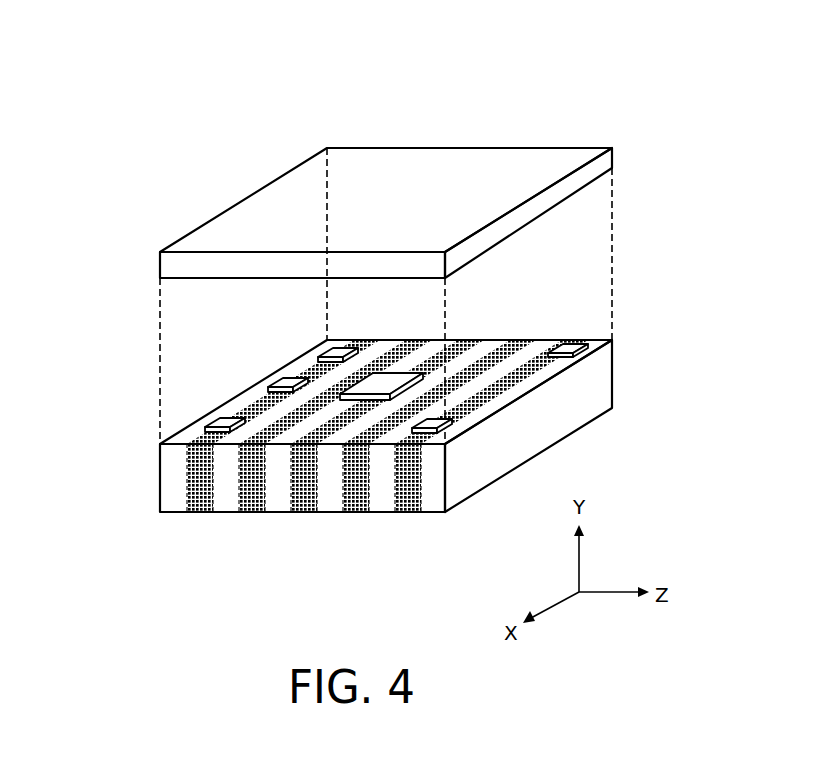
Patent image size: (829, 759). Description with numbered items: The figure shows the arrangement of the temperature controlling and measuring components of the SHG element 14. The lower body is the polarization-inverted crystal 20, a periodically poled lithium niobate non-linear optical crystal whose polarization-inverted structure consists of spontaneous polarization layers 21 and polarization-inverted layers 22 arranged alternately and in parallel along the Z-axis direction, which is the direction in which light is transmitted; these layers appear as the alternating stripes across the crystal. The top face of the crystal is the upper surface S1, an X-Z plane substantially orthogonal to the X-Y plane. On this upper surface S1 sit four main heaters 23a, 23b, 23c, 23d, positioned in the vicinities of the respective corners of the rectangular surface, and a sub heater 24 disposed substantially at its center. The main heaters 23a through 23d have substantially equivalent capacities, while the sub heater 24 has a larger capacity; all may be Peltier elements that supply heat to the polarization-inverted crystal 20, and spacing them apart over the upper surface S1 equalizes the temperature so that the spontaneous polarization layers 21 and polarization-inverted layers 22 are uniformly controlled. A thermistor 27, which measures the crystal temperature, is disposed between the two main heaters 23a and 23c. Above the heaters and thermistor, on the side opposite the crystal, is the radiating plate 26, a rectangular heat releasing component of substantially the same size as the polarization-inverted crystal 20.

The SHG element 14 is at (247, 112).
The radiating plate 26 is at (612, 168).
The upper surface S1 is at (490, 340).
The polarization-inverted crystal 20 is at (386, 384).
The spontaneous polarization layers 21 is at (223, 504).
The polarization-inverted layers 22 is at (200, 506).
The main heater 23a is at (218, 426).
The main heater 23b is at (452, 423).
The main heater 23c is at (330, 349).
The main heater 23d is at (585, 332).
The sub heater 24 is at (430, 373).
The thermistor 27 is at (283, 380).